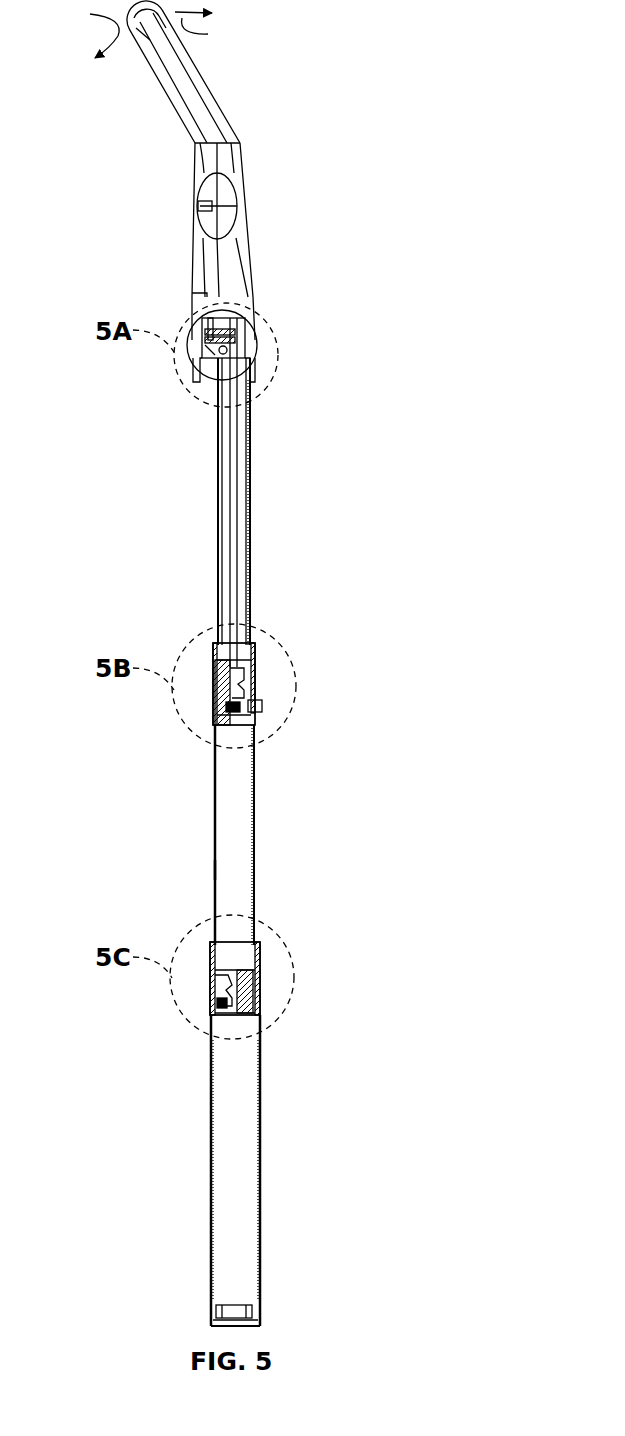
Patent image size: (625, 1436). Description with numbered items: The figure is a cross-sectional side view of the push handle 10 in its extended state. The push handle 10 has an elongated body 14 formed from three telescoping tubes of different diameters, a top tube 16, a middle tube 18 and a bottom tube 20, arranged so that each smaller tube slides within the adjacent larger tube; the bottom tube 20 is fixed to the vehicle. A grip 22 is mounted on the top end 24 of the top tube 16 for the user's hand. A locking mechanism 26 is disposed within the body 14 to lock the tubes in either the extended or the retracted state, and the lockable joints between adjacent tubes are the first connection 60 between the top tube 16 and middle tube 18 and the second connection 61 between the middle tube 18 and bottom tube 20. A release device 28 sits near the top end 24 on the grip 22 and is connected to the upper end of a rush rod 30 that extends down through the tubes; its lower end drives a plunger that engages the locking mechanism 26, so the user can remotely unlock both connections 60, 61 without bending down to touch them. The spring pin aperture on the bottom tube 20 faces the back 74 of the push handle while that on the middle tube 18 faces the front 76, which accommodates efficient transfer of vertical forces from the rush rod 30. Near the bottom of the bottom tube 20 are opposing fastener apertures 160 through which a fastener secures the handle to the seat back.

The push handle 10 is at (268, 42).
The grip 22 is at (205, 155).
The release device 28 is at (221, 323).
The top end 24 is at (253, 408).
The rush rod 30 is at (236, 480).
The top tube 16 is at (218, 440).
The locking mechanism 26 is at (292, 635).
The first connection 60 is at (178, 735).
The middle tube 18 is at (216, 828).
The back 74 is at (215, 868).
The elongated body 14 is at (256, 840).
The front 76 is at (256, 875).
The second connection 61 is at (178, 1025).
The bottom tube 20 is at (212, 1150).
The fastener apertures 160 is at (212, 1312).